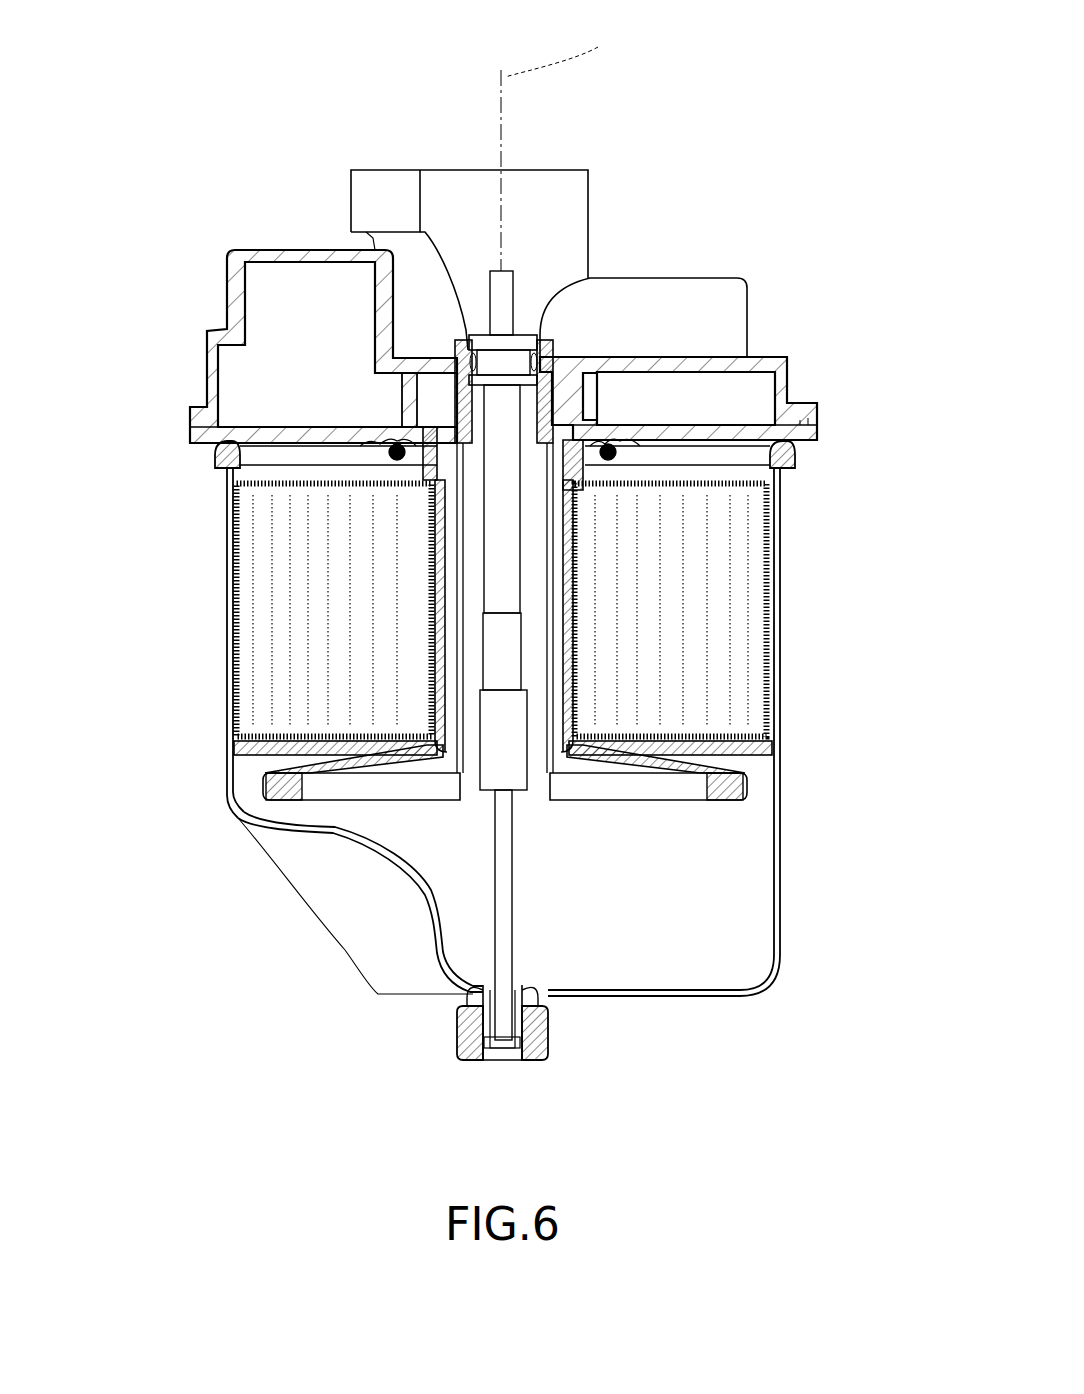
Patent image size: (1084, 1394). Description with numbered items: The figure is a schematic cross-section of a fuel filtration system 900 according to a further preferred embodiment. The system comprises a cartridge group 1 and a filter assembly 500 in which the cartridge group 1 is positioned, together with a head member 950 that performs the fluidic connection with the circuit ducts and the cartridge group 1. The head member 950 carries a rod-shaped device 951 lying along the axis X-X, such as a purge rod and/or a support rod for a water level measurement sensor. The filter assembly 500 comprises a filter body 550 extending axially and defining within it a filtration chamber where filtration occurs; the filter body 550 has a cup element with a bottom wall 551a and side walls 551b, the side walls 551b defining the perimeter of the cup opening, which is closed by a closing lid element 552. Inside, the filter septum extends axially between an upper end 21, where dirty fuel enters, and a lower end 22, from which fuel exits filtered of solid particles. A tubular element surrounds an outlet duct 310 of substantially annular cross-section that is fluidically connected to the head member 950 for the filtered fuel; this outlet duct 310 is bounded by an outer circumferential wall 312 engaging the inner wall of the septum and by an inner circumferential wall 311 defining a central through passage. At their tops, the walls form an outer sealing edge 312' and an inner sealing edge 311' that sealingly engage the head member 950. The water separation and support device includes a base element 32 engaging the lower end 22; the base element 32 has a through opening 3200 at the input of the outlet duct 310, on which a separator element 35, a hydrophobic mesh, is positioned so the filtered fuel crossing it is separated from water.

The fuel filtration system 900 is at (765, 92).
The head member 950 is at (178, 358).
The closing lid element 552 is at (743, 457).
The outer sealing edge 312' is at (666, 320).
The inner sealing edge 311' is at (563, 308).
The rod-shaped device 951 is at (503, 948).
The outlet duct 310 is at (558, 622).
The inner circumferential wall 311 is at (678, 608).
The outer circumferential wall 312 is at (667, 616).
The base element 32 is at (248, 762).
The through opening 3200 is at (670, 800).
The separator element 35 is at (648, 772).
The cartridge group 1 is at (258, 800).
The filter body 550 is at (178, 645).
The upper end 21 is at (250, 483).
The lower end 22 is at (222, 755).
The side walls 551b is at (778, 898).
The bottom wall 551a is at (720, 997).
The filter assembly 500 is at (268, 958).